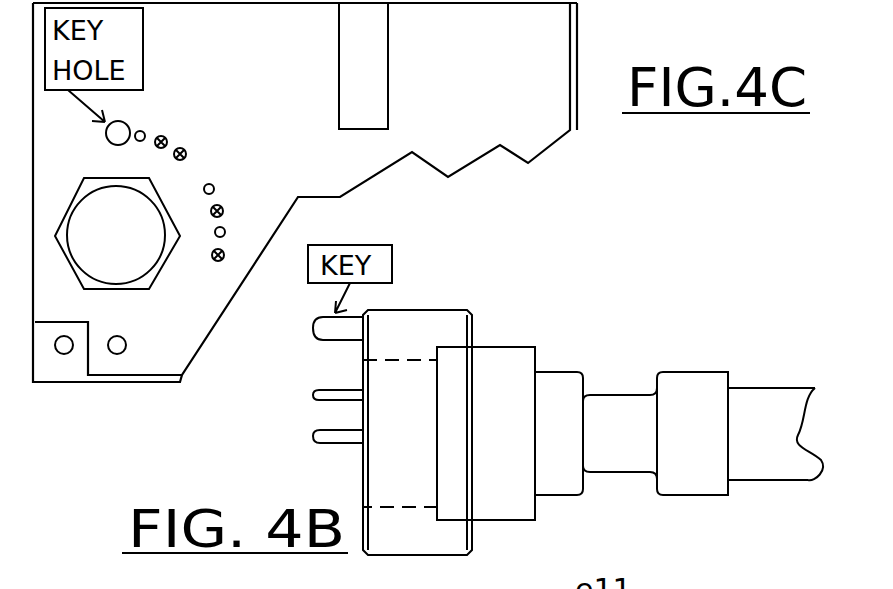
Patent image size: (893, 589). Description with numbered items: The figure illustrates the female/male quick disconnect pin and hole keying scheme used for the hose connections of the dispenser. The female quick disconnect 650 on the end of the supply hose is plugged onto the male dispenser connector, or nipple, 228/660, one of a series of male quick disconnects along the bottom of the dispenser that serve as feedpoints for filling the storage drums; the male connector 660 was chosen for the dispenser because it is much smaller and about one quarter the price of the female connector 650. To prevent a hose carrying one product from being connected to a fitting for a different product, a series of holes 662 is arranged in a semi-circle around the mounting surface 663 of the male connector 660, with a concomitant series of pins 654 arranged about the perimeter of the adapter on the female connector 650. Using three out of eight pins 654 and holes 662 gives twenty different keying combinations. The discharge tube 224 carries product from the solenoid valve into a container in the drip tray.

In FIG. 4C, the discharge tube 224 is at (399, 70).
In FIG. 4C, the male quick disconnect 228 is at (146, 299).
In FIG. 4B, the female quick disconnect 650 is at (511, 432).
In FIG. 4B, the pins 654 is at (296, 440).
In FIG. 4C, the male connector 660 is at (243, 72).
In FIG. 4C, the holes 662 is at (152, 99).
In FIG. 4C, the mounting surface 663 is at (485, 161).